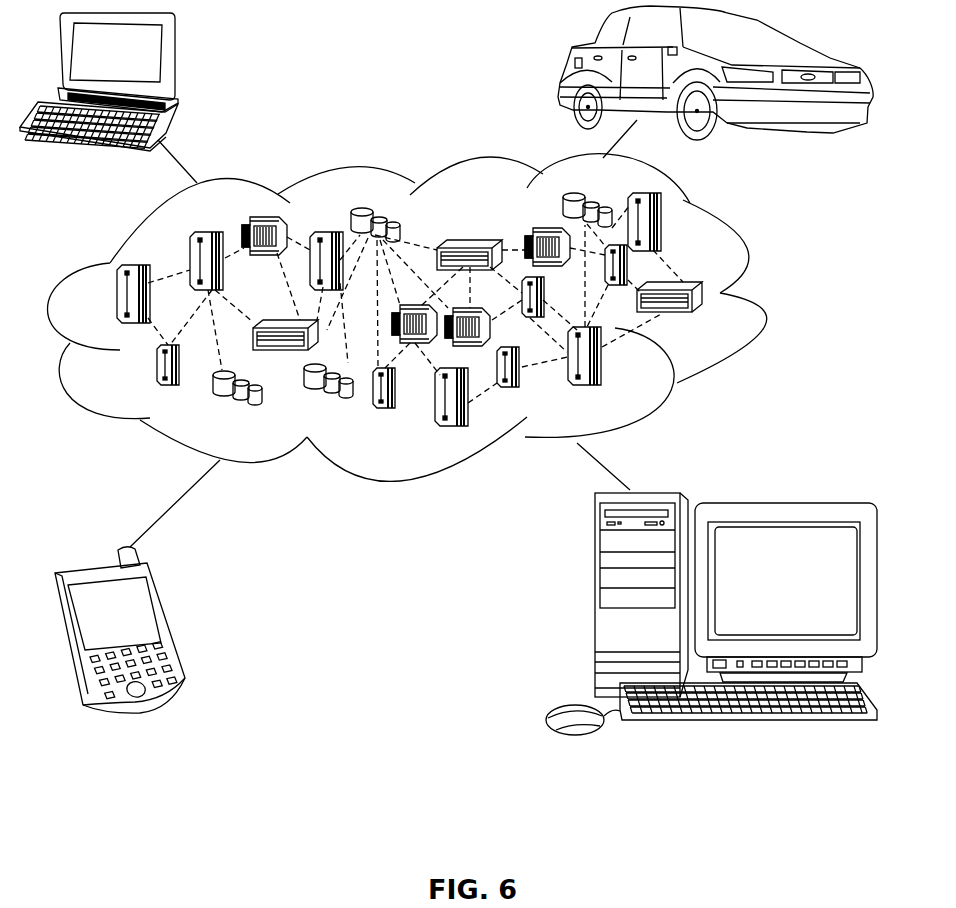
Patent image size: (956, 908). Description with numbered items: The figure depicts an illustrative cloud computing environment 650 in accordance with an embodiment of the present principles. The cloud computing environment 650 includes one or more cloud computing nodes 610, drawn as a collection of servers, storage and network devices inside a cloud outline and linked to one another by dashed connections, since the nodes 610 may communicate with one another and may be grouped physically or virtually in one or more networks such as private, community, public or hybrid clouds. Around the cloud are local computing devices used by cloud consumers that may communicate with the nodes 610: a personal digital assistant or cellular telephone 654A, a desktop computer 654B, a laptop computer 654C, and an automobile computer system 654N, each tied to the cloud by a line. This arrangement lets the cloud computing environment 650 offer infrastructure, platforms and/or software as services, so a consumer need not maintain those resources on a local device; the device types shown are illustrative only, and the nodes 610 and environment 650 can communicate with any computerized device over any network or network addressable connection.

The cloud computing environment 650 is at (750, 260).
The cloud computing nodes 610 is at (735, 320).
The personal digital assistant (PDA) or cellular telephone 654A is at (167, 624).
The desktop computer 654B is at (595, 600).
The laptop computer 654C is at (176, 58).
The automobile computer system 654N is at (572, 60).